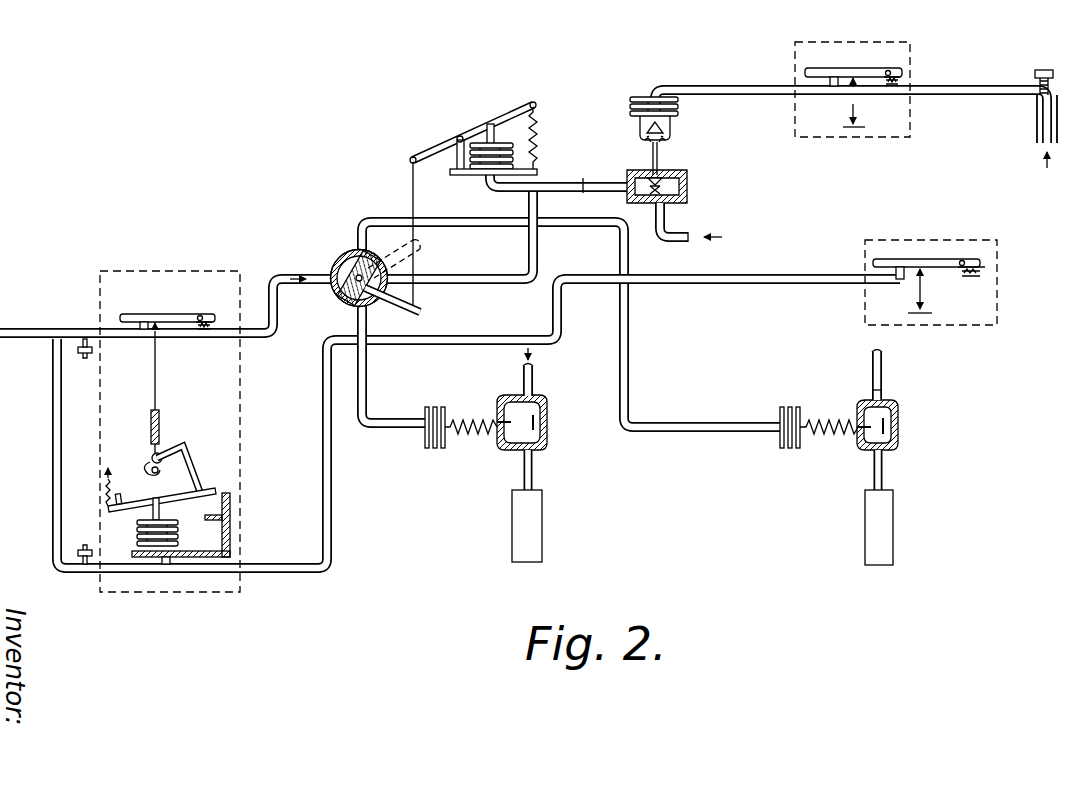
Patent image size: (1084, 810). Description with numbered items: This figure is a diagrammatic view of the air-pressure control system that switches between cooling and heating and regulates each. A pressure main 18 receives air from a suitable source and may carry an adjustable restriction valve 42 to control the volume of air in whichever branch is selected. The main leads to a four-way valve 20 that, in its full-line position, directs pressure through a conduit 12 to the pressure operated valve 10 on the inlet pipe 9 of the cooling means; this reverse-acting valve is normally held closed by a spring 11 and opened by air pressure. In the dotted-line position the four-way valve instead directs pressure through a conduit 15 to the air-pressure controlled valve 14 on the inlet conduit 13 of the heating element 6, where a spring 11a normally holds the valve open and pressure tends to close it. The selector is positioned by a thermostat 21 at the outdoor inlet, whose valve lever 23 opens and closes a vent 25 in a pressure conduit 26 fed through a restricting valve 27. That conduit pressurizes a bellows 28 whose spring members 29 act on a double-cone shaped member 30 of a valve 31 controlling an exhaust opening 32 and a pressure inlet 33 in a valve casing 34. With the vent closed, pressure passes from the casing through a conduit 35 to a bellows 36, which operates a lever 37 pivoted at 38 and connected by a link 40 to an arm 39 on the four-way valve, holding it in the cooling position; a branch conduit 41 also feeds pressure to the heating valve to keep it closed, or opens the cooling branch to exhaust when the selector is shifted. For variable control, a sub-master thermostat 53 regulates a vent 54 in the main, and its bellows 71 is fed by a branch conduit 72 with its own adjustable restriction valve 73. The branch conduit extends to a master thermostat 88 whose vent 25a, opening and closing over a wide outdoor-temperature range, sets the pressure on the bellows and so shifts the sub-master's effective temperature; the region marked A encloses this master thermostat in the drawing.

The pressure main 18 is at (44, 313).
The adjustable restriction valve 42 is at (82, 358).
The vent 54 is at (142, 331).
The sub-master thermostat 53 is at (243, 445).
The adjustable restriction valve 73 is at (82, 566).
The branch conduit 72 is at (126, 575).
The bellows 71 is at (180, 548).
The four-way valve 20 is at (341, 259).
The link 40 is at (422, 244).
The branch conduit 41 is at (510, 274).
The arm 39 is at (392, 311).
The pivot 38 is at (456, 140).
The lever 37 is at (473, 130).
The bellows 36 is at (482, 166).
The bellows 28 is at (680, 109).
The spring members 29 is at (640, 128).
The double-cone shaped member 30 is at (660, 145).
The exhaust opening 32 is at (665, 176).
The valve 31 is at (664, 186).
The valve casing 34 is at (688, 193).
The pressure inlet 33 is at (668, 219).
The conduit 35 is at (558, 191).
The conduit 15 is at (363, 398).
The spring 11a is at (470, 416).
The inlet conduit 13 is at (546, 372).
The air-pressure controlled valve 14 is at (549, 410).
The heating element 6 is at (536, 527).
The conduit 12 is at (632, 364).
The spring 11 is at (830, 416).
The inlet pipe 9 is at (884, 372).
The pressure operated valve 10 is at (899, 446).
The cylinder A is at (888, 528).
The valve lever 23 is at (822, 67).
The thermostat 21 is at (878, 40).
The pressure conduit 26 is at (975, 86).
The restricting valve 27 is at (1046, 68).
The vent 25 is at (833, 87).
The master thermostat 88 is at (1000, 265).
The vent 25a is at (897, 278).